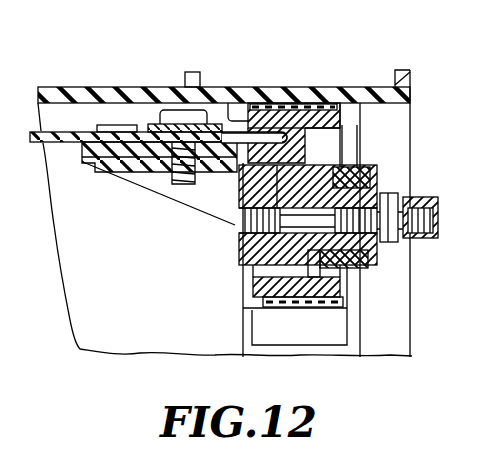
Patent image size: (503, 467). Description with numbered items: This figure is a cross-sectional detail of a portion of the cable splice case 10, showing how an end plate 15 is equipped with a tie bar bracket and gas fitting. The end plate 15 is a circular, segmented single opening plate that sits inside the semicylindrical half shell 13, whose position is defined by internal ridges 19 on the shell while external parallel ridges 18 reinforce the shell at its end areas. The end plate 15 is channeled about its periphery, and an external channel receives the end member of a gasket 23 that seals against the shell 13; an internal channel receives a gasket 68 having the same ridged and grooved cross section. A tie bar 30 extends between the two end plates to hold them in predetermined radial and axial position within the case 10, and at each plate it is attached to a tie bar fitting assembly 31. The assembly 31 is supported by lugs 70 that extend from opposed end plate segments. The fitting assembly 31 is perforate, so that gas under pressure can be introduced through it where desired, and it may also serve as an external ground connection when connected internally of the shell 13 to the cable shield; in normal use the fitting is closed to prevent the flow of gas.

The cable splice case 10 is at (61, 72).
The half shells 13 is at (110, 87).
The external parallel ridges 18 is at (193, 72).
The internal ridges 19 is at (229, 103).
The gasket 23 is at (289, 92).
The tie bar 30 is at (31, 143).
The lugs 70 is at (82, 160).
The tie bar fitting assembly 31 is at (229, 229).
The end plate 15 is at (257, 294).
The gasket 68 is at (272, 306).